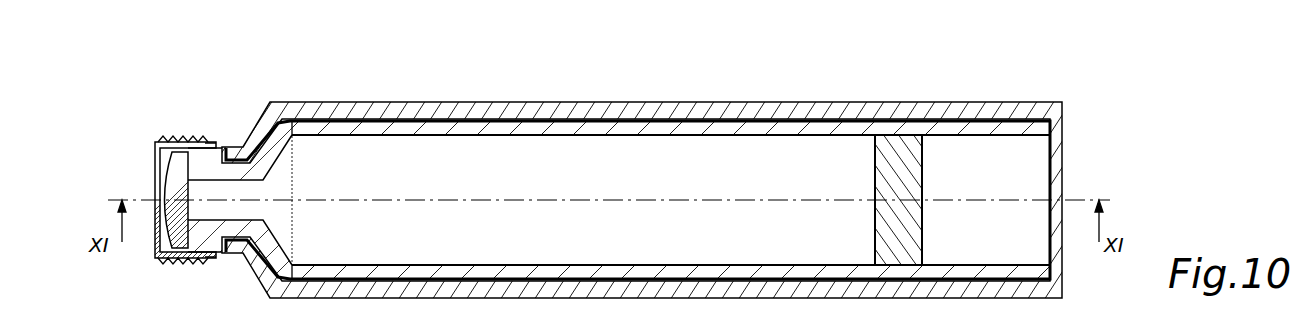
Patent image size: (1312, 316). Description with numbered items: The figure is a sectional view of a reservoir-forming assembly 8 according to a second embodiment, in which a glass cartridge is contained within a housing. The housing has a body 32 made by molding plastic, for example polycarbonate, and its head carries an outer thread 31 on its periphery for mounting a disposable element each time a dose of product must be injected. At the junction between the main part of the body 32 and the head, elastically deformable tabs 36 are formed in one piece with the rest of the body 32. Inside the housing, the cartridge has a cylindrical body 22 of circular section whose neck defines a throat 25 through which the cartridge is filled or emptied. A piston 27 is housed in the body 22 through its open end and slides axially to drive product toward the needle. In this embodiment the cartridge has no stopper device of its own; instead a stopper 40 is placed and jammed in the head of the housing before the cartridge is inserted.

The reservoir-forming assembly 8 is at (748, 92).
The cylindrical body 22 is at (580, 128).
The throat 25 is at (252, 212).
The piston 27 is at (896, 233).
The outer thread 31 is at (188, 124).
The body 32 is at (435, 112).
The elastically deformable tabs 36 is at (229, 145).
The stopper 40 is at (175, 218).